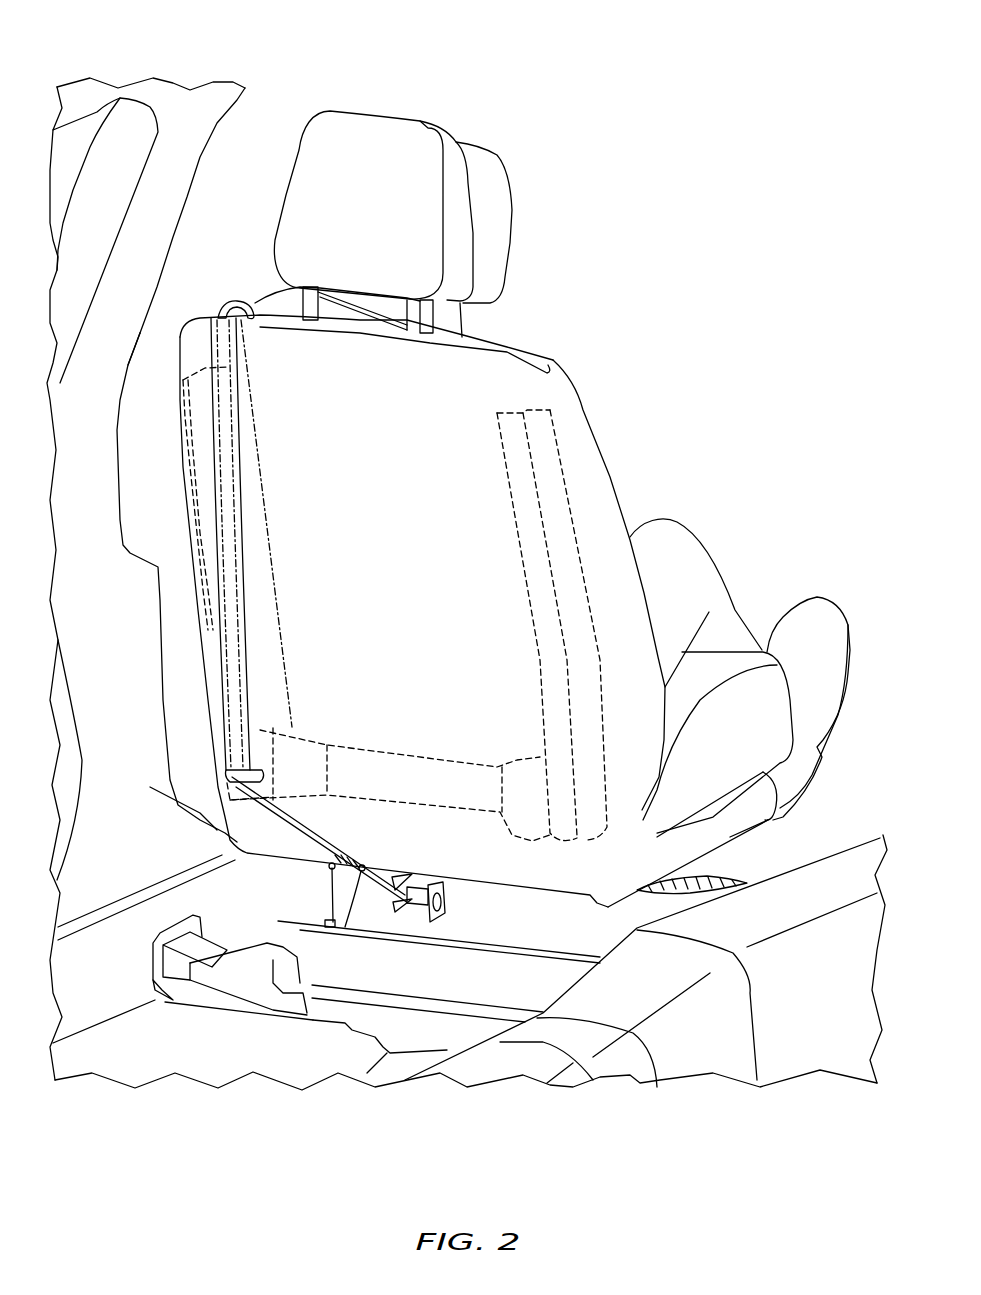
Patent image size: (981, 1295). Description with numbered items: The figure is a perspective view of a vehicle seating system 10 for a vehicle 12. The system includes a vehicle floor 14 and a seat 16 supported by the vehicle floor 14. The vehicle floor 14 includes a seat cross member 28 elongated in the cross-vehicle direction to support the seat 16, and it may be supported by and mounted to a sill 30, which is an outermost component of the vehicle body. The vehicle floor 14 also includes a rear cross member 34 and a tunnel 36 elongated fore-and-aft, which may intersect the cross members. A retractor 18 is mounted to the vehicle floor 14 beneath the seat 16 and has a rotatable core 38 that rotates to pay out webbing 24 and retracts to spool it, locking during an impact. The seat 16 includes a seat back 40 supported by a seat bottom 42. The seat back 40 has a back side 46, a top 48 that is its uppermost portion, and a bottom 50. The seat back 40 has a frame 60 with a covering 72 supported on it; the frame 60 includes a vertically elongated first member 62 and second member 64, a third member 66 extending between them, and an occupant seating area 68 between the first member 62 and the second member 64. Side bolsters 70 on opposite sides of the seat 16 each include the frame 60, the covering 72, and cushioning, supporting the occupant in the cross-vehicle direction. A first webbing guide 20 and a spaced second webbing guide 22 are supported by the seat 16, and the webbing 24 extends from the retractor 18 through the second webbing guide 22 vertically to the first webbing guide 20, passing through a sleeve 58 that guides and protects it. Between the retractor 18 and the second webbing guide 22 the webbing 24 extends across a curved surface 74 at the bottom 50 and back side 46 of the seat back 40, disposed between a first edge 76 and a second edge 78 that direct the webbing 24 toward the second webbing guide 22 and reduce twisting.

The vehicle seating system 10 is at (132, 55).
The vehicle 12 is at (300, 77).
The vehicle floor 14 is at (380, 973).
The seat 16 is at (543, 365).
The retractor 18 is at (432, 922).
The first webbing guide 20 is at (227, 300).
The second webbing guide 22 is at (260, 772).
The webbing 24 is at (245, 578).
The seat cross member 28 is at (677, 903).
The sill 30 is at (192, 900).
The rear cross member 34 is at (418, 1046).
The tunnel 36 is at (825, 960).
The rotatable core 38 is at (447, 897).
The seat back 40 is at (570, 432).
The seat bottom 42 is at (763, 690).
The back side 46 is at (333, 448).
The top 48 is at (190, 343).
The bottom 50 is at (240, 827).
The sleeve 58 is at (240, 507).
The frame 60 is at (492, 440).
The first member 62 is at (183, 417).
The second member 64 is at (509, 530).
The third member 66 is at (412, 752).
The occupant seating area 68 is at (500, 342).
The side bolster 70 is at (185, 493).
The covering 72 is at (487, 567).
The curved surface 74 is at (362, 864).
The first edge 76 is at (328, 877).
The second edge 78 is at (337, 927).